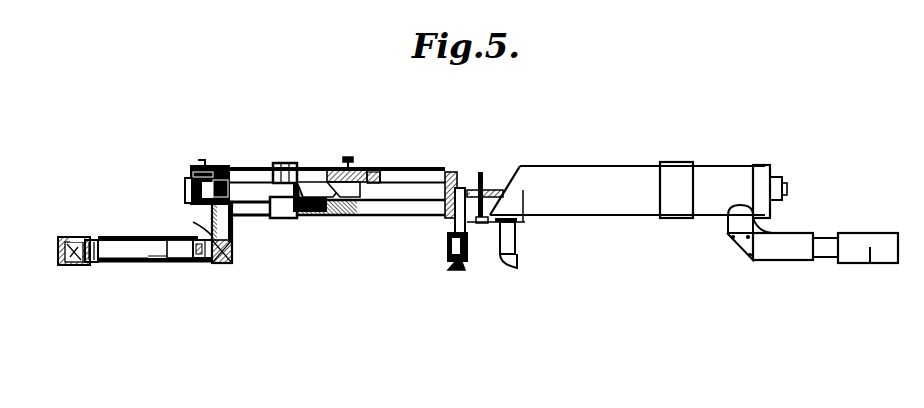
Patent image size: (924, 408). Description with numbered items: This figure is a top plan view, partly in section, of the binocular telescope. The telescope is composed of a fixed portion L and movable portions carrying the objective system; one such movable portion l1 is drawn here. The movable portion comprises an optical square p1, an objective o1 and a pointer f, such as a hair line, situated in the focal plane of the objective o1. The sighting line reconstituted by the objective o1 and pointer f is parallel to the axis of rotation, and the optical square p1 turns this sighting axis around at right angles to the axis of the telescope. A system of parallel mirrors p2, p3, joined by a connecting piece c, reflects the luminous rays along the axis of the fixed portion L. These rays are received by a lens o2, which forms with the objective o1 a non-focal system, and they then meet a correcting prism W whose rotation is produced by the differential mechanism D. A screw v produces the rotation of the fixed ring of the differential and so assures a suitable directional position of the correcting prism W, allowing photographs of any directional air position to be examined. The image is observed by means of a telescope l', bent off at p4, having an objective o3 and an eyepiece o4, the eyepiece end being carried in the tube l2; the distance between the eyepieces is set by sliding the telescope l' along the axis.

The fixed portion L is at (573, 208).
The eyepiece tube l2 is at (795, 253).
The optical square p1 is at (67, 263).
The objective o1 is at (95, 262).
The lateral tube l1 is at (158, 262).
The pointer f is at (200, 262).
The parallel mirror p2 is at (223, 247).
The connecting piece c is at (210, 237).
The parallel mirror p3 is at (217, 175).
The telescope l' is at (338, 173).
The lens o2 is at (280, 183).
The differential mechanism D is at (313, 210).
The correcting prism W is at (315, 188).
The screw v is at (352, 157).
The objective o3 is at (380, 182).
The bend prism p4 is at (455, 195).
The eyepiece o4 is at (450, 253).